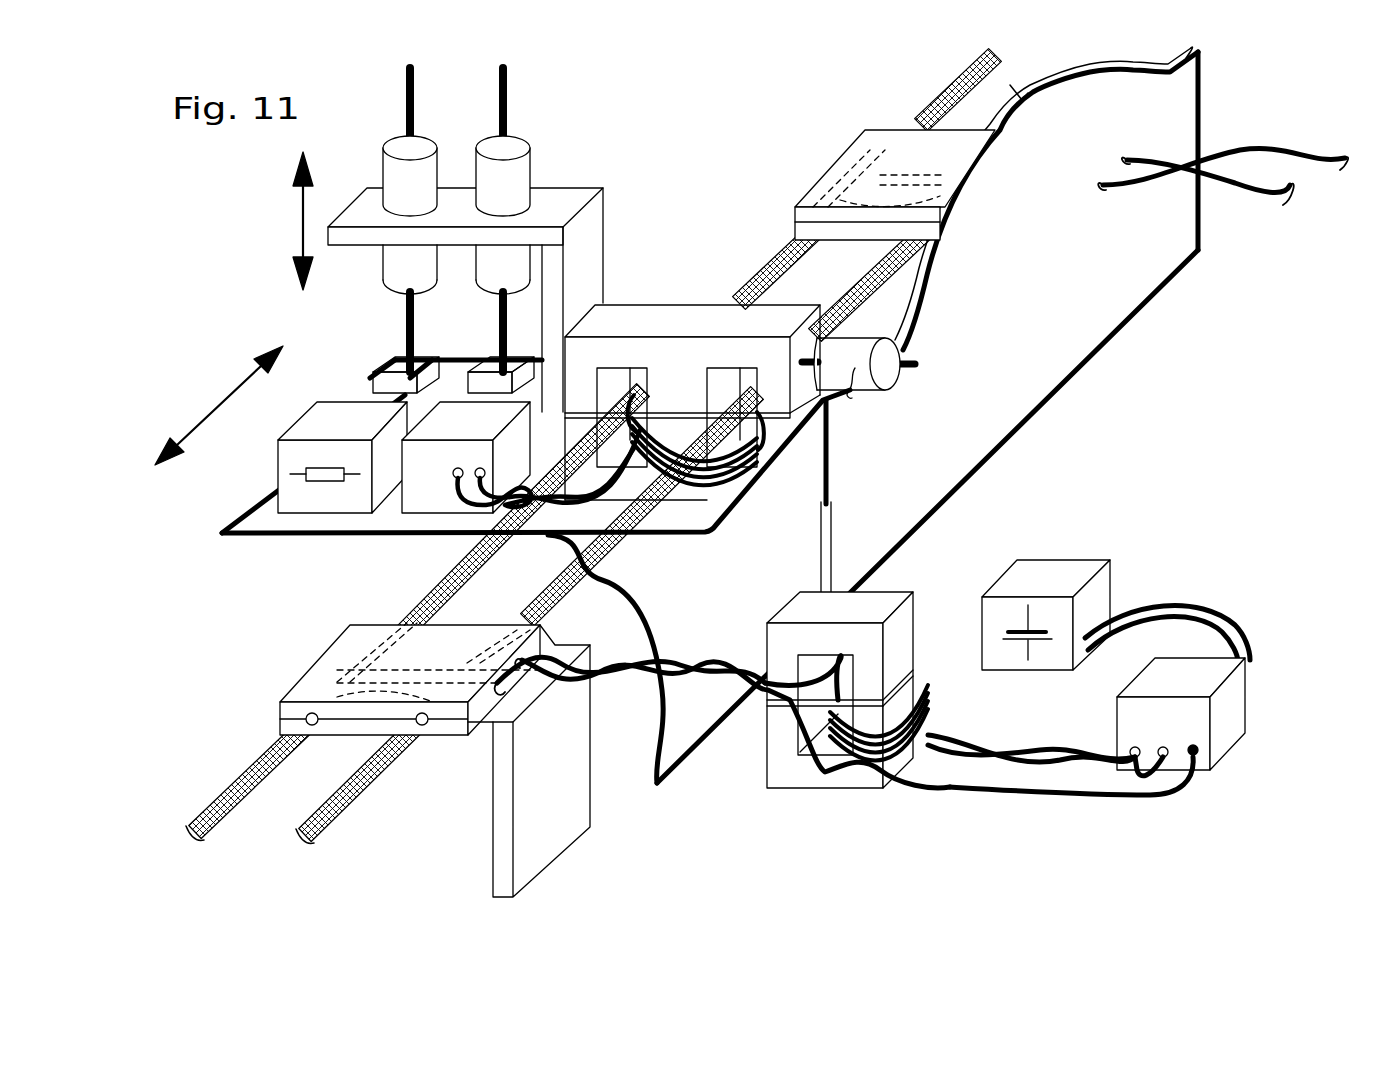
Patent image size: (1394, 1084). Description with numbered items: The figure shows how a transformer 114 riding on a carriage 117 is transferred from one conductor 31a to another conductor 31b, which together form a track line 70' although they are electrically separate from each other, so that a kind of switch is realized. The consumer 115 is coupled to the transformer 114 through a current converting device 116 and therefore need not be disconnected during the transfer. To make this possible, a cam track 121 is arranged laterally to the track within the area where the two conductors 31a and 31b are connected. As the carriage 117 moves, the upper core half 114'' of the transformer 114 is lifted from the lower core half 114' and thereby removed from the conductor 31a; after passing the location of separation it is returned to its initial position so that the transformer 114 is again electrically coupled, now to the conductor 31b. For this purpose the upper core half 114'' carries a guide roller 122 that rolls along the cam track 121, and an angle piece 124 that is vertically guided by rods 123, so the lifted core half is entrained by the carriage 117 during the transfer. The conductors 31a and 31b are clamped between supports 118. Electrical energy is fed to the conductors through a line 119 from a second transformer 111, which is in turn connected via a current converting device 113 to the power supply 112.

The track line 70' is at (902, 87).
The conductor 31b is at (927, 122).
The conductor 31a is at (783, 253).
The supports 118 is at (849, 147).
The rods 123 is at (523, 140).
The angle piece 124 is at (585, 190).
The transformer 114 is at (692, 361).
The upper core half 114'' is at (710, 285).
The lower core half 114' is at (723, 486).
The cam track 121 is at (1028, 98).
The guide roller 122 is at (855, 396).
The consumer 115 is at (275, 462).
The current converting device 116 is at (397, 497).
The carriage 117 is at (260, 538).
The transformer 111 is at (872, 576).
The power supply 112 is at (1066, 560).
The current converting device 113 is at (1246, 660).
The line 119 is at (603, 682).